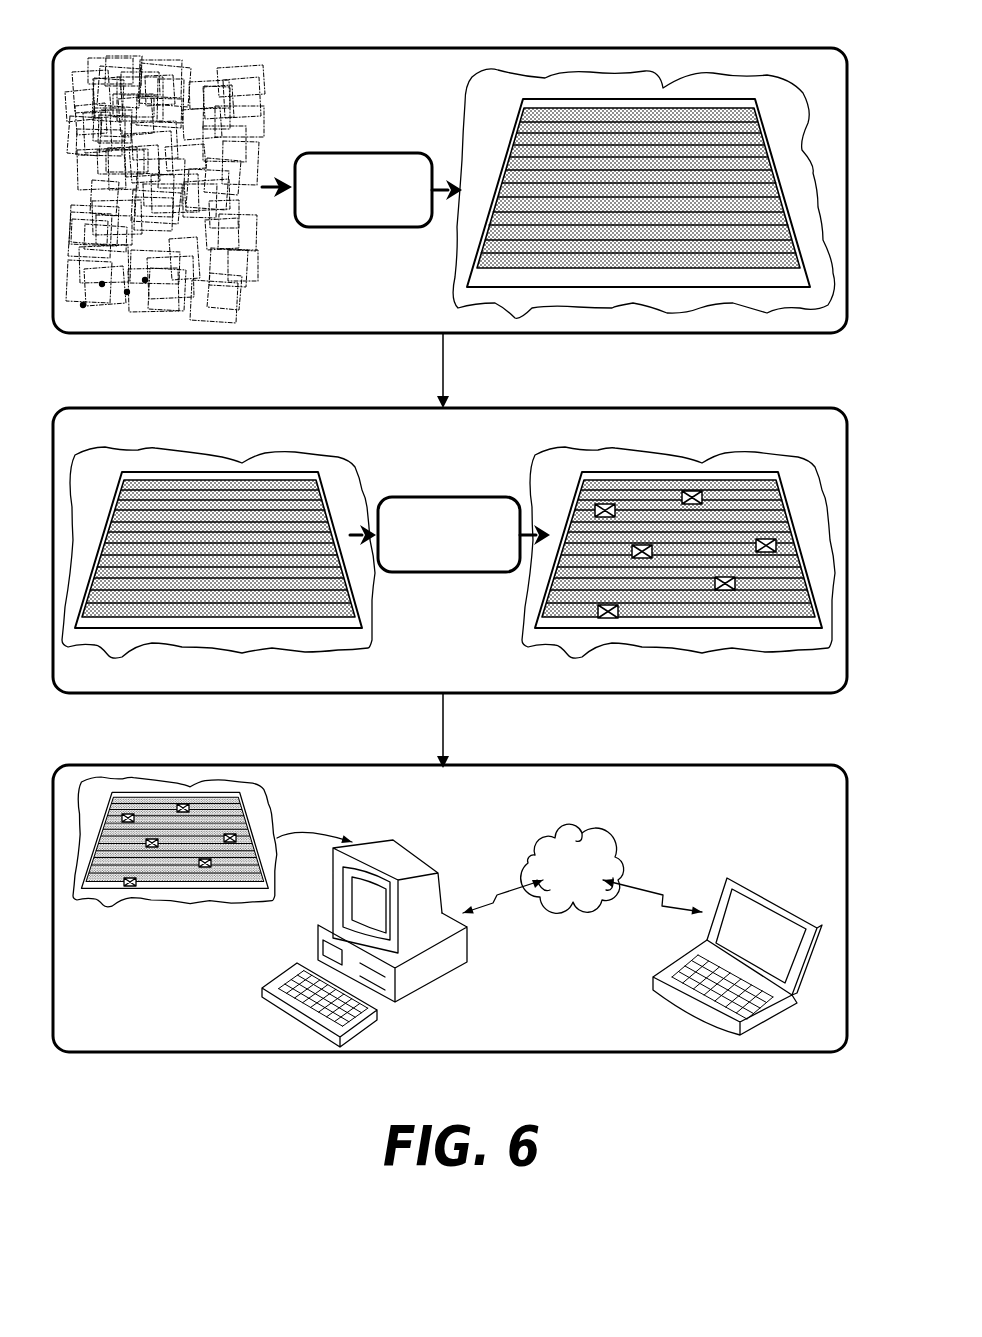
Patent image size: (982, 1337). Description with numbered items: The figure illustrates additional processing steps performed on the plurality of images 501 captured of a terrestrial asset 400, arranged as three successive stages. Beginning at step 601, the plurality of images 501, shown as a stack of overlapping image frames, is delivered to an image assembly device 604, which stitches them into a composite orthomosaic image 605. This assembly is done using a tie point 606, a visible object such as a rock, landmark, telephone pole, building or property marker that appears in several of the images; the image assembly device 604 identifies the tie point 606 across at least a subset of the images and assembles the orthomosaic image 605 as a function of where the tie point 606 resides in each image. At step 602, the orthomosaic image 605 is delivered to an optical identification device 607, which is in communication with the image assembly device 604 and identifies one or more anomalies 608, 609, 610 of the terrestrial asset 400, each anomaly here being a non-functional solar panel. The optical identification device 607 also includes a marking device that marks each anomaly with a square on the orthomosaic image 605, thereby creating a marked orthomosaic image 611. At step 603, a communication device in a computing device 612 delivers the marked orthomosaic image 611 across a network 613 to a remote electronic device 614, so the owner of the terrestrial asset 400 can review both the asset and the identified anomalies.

The terrestrial asset 400 is at (140, 908).
The plurality of images 501 is at (286, 254).
The step 601 is at (847, 267).
The step 602 is at (847, 637).
The step 603 is at (847, 1003).
The image assembly device 604 is at (377, 153).
The orthomosaic image 605 is at (226, 450).
The tie point 606 is at (83, 305).
The optical identification device 607 is at (437, 497).
The anomaly 608 is at (605, 503).
The anomaly 609 is at (690, 491).
The anomaly 610 is at (727, 590).
The marked orthomosaic image 611 is at (225, 908).
The computing device 612 is at (423, 857).
The network 613 is at (578, 840).
The remote electronic device 614 is at (760, 890).